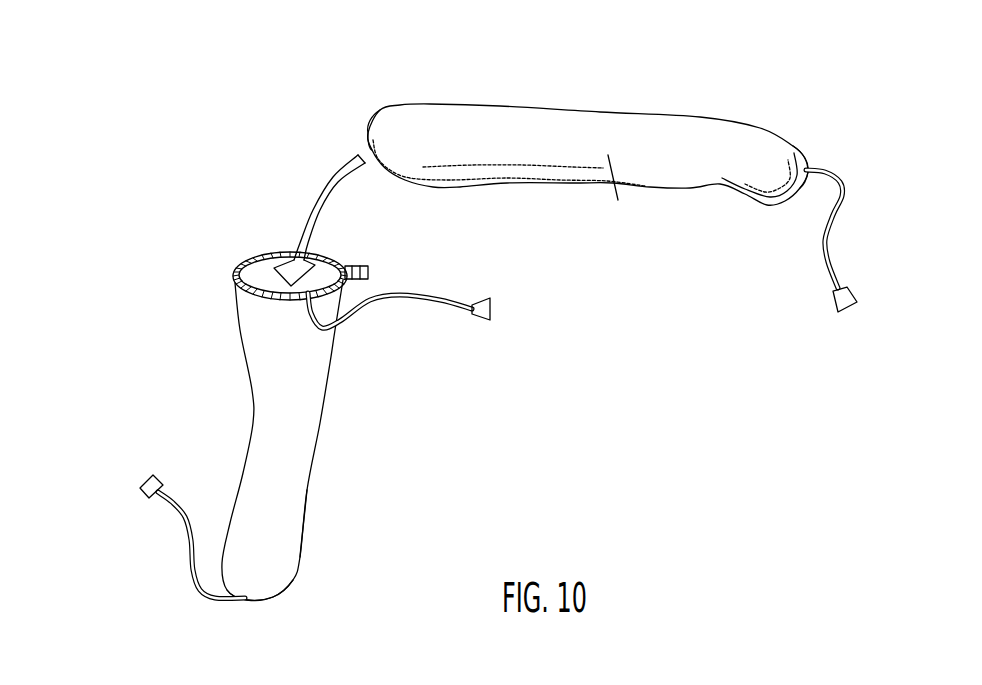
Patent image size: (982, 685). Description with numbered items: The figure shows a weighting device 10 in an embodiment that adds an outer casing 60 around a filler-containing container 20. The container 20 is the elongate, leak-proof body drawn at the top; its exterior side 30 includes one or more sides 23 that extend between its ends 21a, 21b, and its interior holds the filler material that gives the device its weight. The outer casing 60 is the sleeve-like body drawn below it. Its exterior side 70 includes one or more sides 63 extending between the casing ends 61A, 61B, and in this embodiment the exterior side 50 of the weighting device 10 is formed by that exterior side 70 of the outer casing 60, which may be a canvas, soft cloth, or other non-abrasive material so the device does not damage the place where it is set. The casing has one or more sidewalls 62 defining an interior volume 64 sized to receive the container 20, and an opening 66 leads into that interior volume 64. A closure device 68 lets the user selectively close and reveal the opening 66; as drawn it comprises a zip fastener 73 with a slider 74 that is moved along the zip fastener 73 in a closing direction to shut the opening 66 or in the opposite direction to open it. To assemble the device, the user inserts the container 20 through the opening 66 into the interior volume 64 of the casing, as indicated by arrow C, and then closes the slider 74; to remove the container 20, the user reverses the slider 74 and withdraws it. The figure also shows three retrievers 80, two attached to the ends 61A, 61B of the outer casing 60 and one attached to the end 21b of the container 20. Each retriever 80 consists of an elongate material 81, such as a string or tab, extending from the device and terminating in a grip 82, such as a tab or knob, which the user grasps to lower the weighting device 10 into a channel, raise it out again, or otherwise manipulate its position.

The weighting device 10 is at (200, 93).
The container 20 is at (580, 115).
The first end of container 21a is at (376, 108).
The second end of container 21b is at (804, 146).
The side of container 23 is at (619, 197).
The exterior side of container 30 is at (682, 143).
The exterior side of weighting device 50 is at (303, 425).
The outer casing 60 is at (333, 350).
The first end of outer casing 61A is at (224, 296).
The second end of outer casing 61B is at (302, 576).
The sidewall of outer casing 62 is at (313, 267).
The side of outer casing 63 is at (303, 388).
The interior volume of outer casing 64 is at (323, 278).
The opening 66 is at (230, 270).
The closure device 68 is at (257, 252).
The exterior side of outer casing 70 is at (295, 488).
The zip fastener 73 is at (257, 301).
The slider 74 is at (368, 270).
The retriever 80 is at (846, 231).
The elongate material 81 is at (818, 230).
The grip 82 is at (855, 290).
The arrow C is at (327, 180).